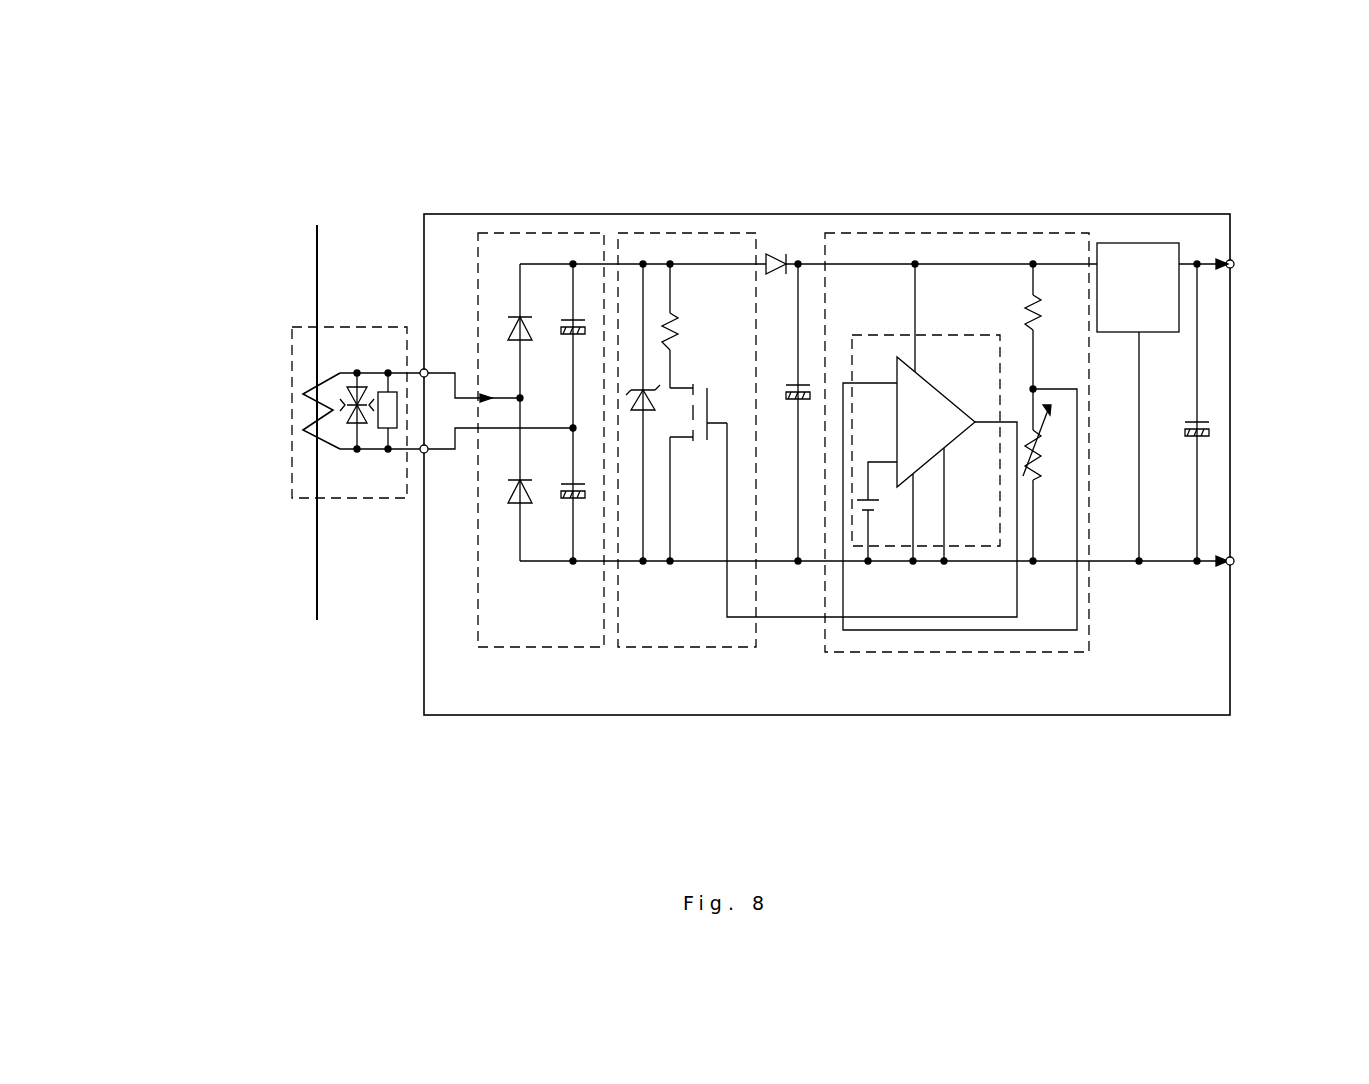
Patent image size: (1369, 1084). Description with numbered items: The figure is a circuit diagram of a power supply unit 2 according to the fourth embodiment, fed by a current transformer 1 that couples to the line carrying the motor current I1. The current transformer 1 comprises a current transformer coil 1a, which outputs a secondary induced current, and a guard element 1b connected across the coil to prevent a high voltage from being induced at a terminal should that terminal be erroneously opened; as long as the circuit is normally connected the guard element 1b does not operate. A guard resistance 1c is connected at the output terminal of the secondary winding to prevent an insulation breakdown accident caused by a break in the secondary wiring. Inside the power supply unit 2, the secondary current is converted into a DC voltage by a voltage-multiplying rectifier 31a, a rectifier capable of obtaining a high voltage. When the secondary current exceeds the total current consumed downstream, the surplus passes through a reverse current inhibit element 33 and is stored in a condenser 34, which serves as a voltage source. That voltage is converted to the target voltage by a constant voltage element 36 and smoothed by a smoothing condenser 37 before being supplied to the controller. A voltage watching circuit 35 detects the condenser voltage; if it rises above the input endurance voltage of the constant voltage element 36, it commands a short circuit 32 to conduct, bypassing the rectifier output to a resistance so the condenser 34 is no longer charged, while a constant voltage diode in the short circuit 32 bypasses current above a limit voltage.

The current transformer 1 is at (292, 402).
The current transformer coil 1a is at (318, 398).
The guard element 1b is at (355, 420).
The guard resistance 1c is at (385, 430).
The power supply unit 2 is at (424, 700).
The voltage-multiplying rectifier 31a is at (528, 635).
The short circuit 32 is at (680, 635).
The reverse current inhibit element 33 is at (775, 256).
The condenser 34 is at (806, 382).
The voltage watching circuit 35 is at (963, 645).
The constant voltage element 36 is at (1106, 243).
The smoothing condenser 37 is at (1207, 417).
The motor current I1 is at (320, 590).